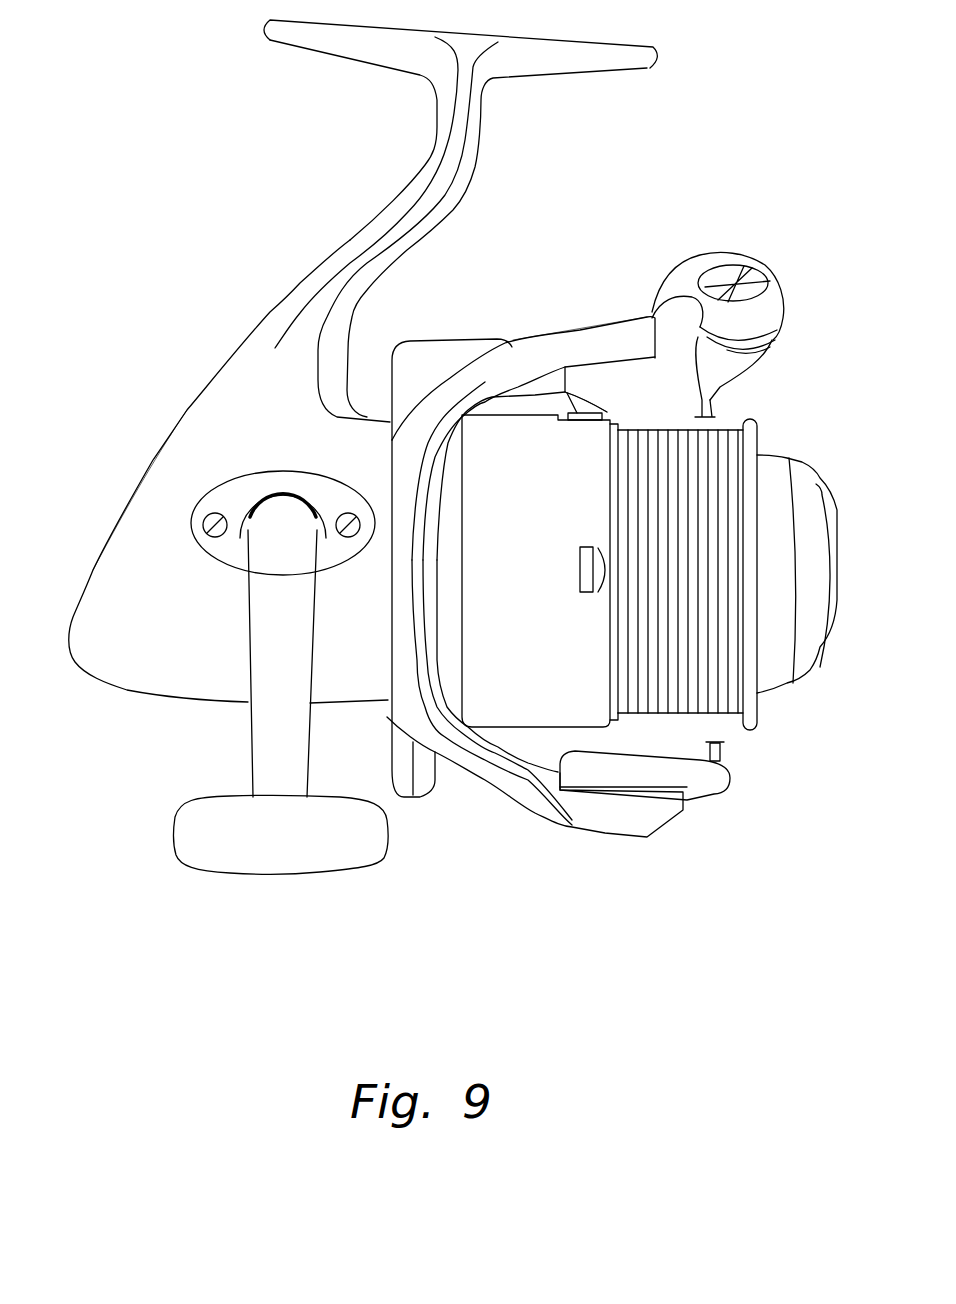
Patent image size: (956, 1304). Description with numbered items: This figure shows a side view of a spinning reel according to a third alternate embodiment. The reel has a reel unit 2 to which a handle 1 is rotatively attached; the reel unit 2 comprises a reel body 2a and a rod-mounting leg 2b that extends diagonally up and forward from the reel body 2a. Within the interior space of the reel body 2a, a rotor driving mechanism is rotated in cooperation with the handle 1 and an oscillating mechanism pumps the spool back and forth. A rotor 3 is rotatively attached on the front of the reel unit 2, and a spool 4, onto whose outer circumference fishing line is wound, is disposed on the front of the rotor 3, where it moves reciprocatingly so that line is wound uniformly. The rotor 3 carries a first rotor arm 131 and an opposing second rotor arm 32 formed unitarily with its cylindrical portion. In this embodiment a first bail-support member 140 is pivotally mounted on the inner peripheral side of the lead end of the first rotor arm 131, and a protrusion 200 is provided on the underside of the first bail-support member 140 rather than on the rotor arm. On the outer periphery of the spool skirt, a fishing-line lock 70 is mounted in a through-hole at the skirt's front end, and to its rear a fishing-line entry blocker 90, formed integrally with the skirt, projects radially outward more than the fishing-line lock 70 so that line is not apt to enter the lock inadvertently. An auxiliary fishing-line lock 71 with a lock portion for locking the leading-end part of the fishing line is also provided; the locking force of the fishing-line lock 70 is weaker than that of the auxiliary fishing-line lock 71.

The handle 1 is at (278, 740).
The reel unit 2 is at (187, 410).
The reel body 2a is at (163, 477).
The rod-mounting leg 2b is at (270, 312).
The rotor 3 is at (452, 336).
The spool 4 is at (720, 432).
The second rotor arm 32 is at (590, 812).
The fishing-line lock 70 is at (607, 592).
The fishing-line entry blocker 90 is at (580, 595).
The first rotor arm 131 is at (577, 413).
The auxiliary fishing-line lock 71 is at (597, 397).
The protrusion 200 is at (643, 373).
The first bail-support member 140 is at (727, 303).